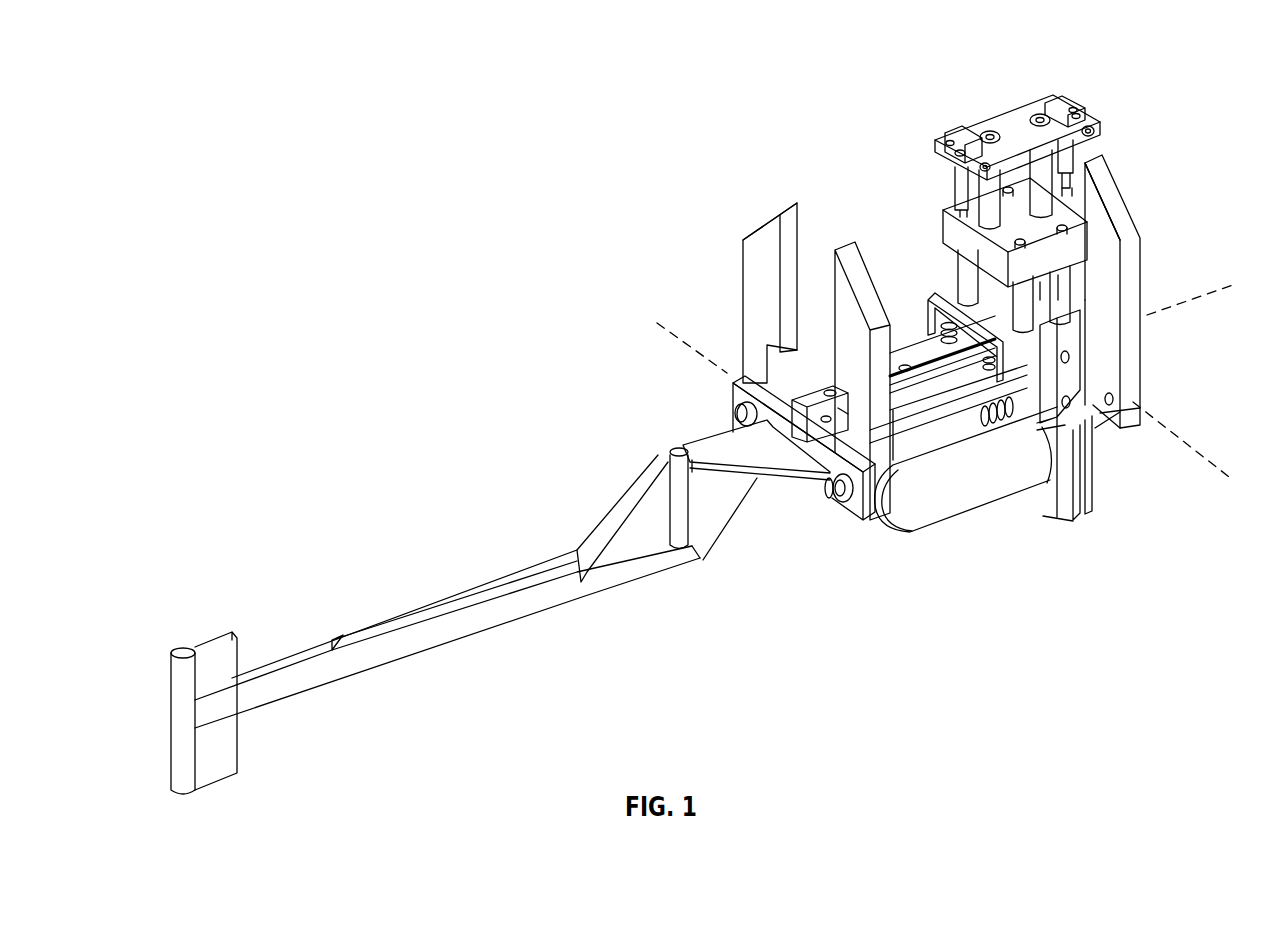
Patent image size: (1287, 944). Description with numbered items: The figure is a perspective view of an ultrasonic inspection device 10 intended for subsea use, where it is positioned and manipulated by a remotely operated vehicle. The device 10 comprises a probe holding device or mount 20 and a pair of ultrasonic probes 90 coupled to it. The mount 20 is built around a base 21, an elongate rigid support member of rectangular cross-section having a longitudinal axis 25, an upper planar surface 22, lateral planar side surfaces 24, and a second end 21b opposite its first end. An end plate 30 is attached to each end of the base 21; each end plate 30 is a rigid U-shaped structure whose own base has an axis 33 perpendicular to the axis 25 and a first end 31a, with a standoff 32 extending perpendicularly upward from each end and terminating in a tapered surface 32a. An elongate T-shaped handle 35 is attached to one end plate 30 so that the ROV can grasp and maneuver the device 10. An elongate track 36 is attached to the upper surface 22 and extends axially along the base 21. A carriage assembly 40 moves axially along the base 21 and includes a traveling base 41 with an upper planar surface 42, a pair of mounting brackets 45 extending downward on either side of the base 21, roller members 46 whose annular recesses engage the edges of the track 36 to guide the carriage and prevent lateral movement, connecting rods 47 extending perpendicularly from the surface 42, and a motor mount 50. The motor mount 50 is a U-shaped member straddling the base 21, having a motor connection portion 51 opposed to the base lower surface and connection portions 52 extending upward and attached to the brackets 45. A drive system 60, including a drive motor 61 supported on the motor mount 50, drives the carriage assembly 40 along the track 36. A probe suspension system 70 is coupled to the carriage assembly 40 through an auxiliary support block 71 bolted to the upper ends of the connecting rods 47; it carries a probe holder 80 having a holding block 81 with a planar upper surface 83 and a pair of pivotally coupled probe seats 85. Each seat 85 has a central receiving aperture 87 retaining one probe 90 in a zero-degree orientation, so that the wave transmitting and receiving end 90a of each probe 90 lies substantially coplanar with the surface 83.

The ultrasonic inspection device 10 is at (242, 103).
The probe holding device or mount 20 is at (693, 447).
The base 21 is at (953, 490).
The second end 21b is at (843, 412).
The upper planar surface 22 is at (937, 383).
The lateral planar side surfaces 24 is at (903, 417).
The central or longitudinal axis 25 is at (1200, 300).
The end plate 30 is at (959, 337).
The first end 31a is at (1113, 423).
The standoffs 32 is at (959, 337).
The tapered surface 32a is at (935, 201).
The central or longitudinal axis 33 is at (673, 338).
The handle 35 is at (468, 627).
The track 36 is at (820, 385).
The carriage assembly 40 is at (935, 235).
The traveling base or block 41 is at (952, 381).
The upper planar surface 42 is at (977, 310).
The mounting brackets 45 is at (1060, 385).
The guide wheels or roller members 46 is at (940, 340).
The connecting rods 47 is at (1050, 277).
The motor mount 50 is at (1085, 510).
The motor connection portion 51 is at (1057, 513).
The connection portions 52 is at (1090, 395).
The drive system 60 is at (1033, 514).
The drive motor 61 is at (927, 518).
The probe suspension system 70 is at (1002, 126).
The auxiliary support block 71 is at (1070, 222).
The probe holder 80 is at (1017, 110).
The holding block 81 is at (1035, 110).
The upper surface 83 is at (995, 122).
The ultrasonic probe seats 85 is at (967, 150).
The central receiving aperture 87 is at (1058, 107).
The ultrasonic probes 90 is at (963, 183).
The wave transmitting/receiving end 90a is at (960, 130).